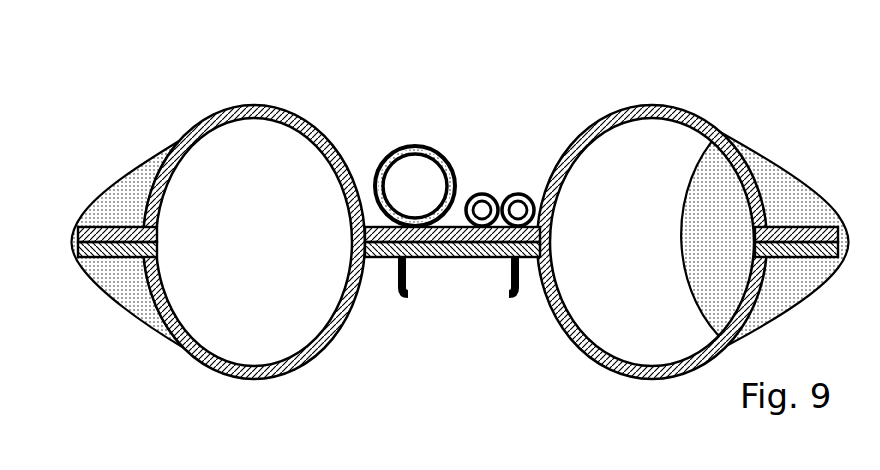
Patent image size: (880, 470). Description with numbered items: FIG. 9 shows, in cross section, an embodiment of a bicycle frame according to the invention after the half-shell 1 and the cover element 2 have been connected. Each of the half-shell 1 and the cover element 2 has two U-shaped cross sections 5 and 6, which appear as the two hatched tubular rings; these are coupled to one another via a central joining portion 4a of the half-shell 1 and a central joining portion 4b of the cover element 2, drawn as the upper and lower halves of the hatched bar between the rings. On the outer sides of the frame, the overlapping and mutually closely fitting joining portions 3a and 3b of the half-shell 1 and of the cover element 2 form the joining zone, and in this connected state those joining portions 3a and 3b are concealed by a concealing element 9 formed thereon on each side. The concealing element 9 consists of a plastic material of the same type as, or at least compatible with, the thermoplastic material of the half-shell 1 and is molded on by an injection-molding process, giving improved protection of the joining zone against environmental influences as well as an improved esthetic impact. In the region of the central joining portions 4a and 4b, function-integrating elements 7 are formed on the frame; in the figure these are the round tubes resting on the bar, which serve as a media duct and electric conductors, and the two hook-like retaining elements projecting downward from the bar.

The half-shell 1 is at (146, 101).
The cover element 2 is at (185, 393).
The joining portion 3a is at (90, 236).
The joining portion 3b is at (93, 253).
The joining portion 4a is at (452, 228).
The joining portion 4b is at (458, 250).
The U-shaped cross section 5 is at (240, 103).
The U-shaped cross section 6 is at (257, 383).
The function-integrating element 7 is at (400, 145).
The concealing element 9 is at (115, 203).